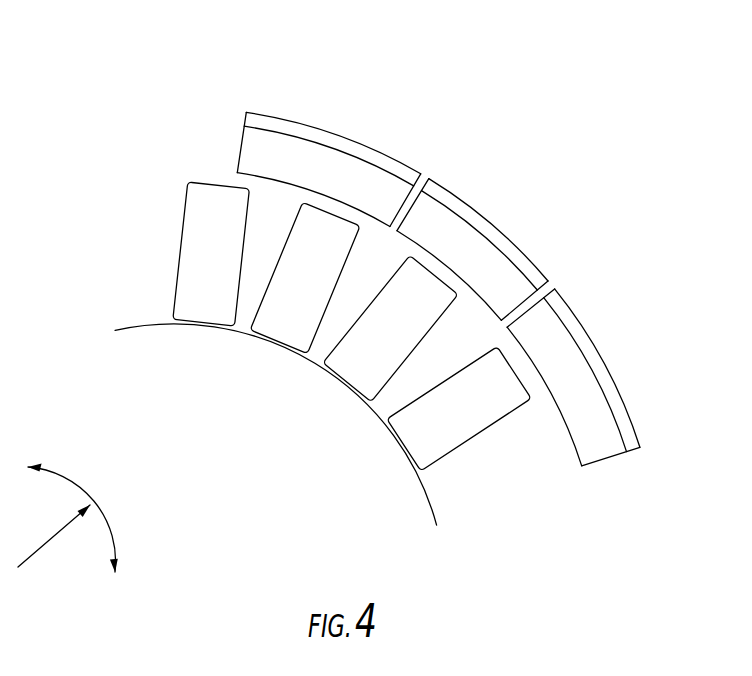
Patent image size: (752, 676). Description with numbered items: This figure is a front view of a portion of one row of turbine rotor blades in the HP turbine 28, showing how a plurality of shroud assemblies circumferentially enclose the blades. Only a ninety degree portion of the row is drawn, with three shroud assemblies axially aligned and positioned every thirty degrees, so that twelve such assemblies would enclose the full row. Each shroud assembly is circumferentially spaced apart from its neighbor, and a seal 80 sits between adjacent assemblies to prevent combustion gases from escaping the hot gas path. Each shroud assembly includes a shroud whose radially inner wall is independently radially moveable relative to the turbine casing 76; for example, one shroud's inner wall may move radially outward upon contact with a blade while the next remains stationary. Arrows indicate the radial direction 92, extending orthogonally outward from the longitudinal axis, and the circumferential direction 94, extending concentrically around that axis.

The HP turbine 28 is at (155, 93).
The turbine casing 76 is at (270, 120).
The seal 80 is at (425, 175).
The arrow 92 is at (35, 553).
The arrow 94 is at (112, 538).